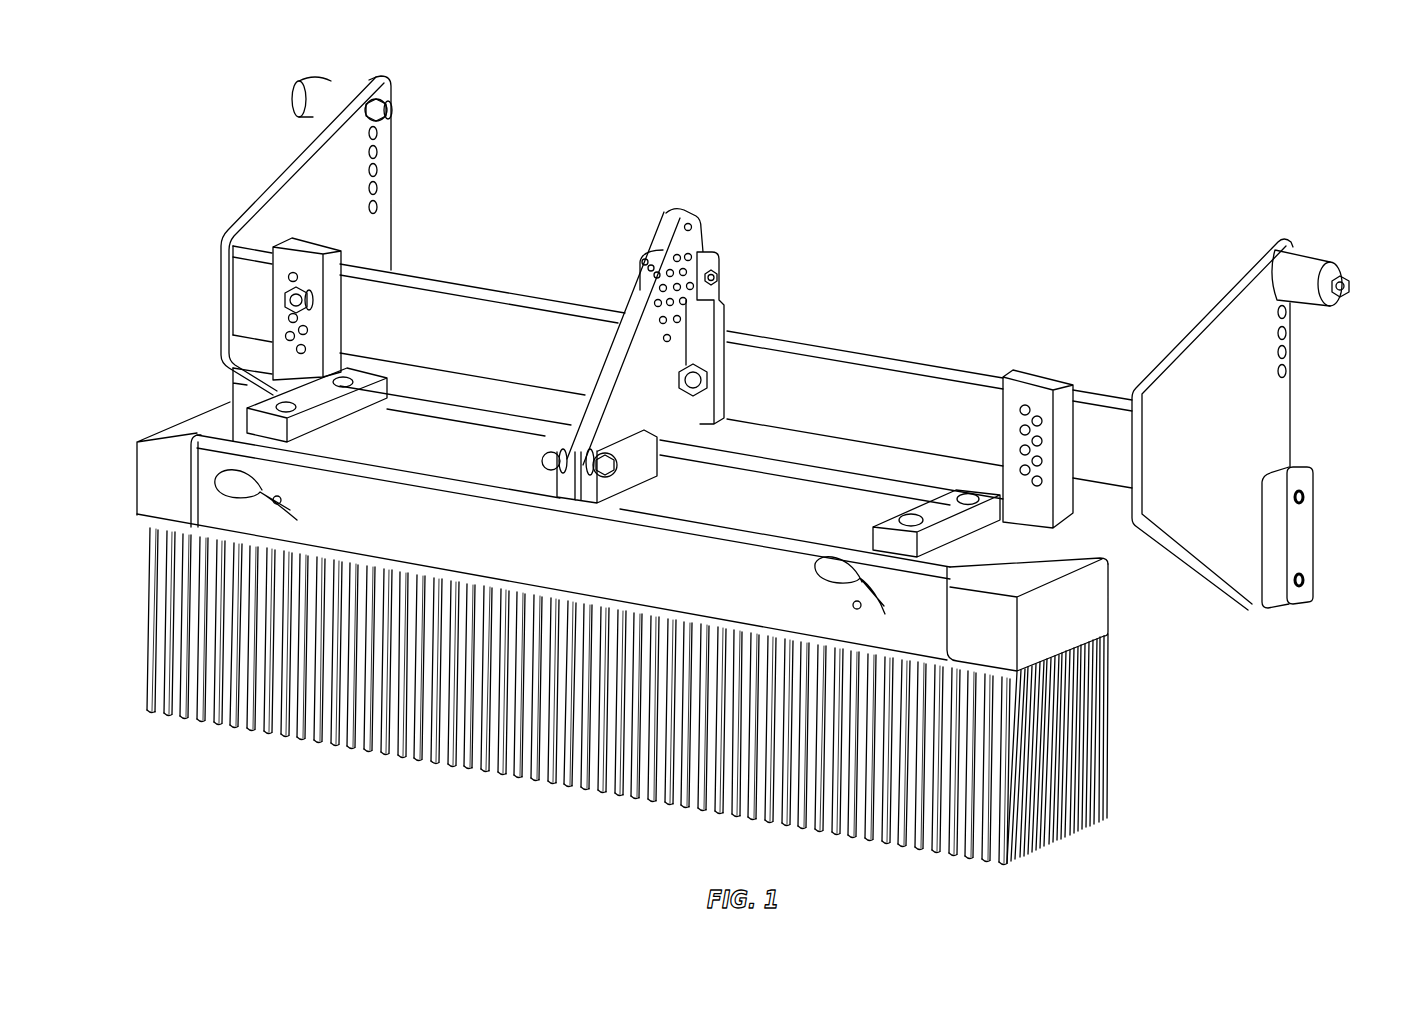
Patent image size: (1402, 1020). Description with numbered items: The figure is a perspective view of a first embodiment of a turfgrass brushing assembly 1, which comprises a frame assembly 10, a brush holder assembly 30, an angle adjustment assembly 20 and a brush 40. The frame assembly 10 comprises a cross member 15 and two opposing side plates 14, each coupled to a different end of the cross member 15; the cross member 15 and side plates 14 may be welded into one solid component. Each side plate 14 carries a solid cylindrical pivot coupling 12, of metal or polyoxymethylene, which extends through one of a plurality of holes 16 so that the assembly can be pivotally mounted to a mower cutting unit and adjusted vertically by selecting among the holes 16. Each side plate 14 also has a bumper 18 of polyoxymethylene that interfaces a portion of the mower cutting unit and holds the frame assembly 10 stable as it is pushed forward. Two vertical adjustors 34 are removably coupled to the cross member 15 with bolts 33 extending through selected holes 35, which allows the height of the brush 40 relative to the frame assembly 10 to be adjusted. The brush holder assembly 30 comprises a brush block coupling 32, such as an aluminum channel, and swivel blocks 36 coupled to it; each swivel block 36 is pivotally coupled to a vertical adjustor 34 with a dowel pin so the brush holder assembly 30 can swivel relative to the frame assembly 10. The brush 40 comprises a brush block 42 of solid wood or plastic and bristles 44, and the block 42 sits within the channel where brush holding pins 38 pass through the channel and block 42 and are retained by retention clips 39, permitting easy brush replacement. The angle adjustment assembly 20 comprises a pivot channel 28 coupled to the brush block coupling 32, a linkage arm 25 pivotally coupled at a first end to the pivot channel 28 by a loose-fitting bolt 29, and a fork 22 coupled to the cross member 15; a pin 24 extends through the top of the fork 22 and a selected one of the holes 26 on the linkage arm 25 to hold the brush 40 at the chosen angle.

The turfgrass brushing assembly 1 is at (992, 135).
The frame assembly 10 is at (246, 141).
The pivot coupling 12 is at (330, 92).
The side plate 14 is at (367, 80).
The cross member 15 is at (490, 298).
The holes 16 is at (377, 149).
The bumper 18 is at (1290, 470).
The angle adjustment assembly 20 is at (646, 211).
The fork 22 is at (698, 250).
The pin 24 is at (718, 277).
The linkage arm 25 is at (616, 360).
The holes 26 is at (683, 293).
The pivot channel 28 is at (636, 471).
The loose-fitting bolt 29 is at (546, 456).
The brush holder assembly 30 is at (800, 454).
The brush block coupling 32 is at (207, 503).
The bolt 33 is at (287, 303).
The vertical adjustor 34 is at (305, 243).
The holes 35 is at (305, 331).
The swivel block 36 is at (310, 393).
The brush holding pin 38 is at (286, 499).
The retention clip 39 is at (240, 479).
The brush 40 is at (110, 435).
The brush block 42 is at (1098, 603).
The bristles 44 is at (1070, 725).